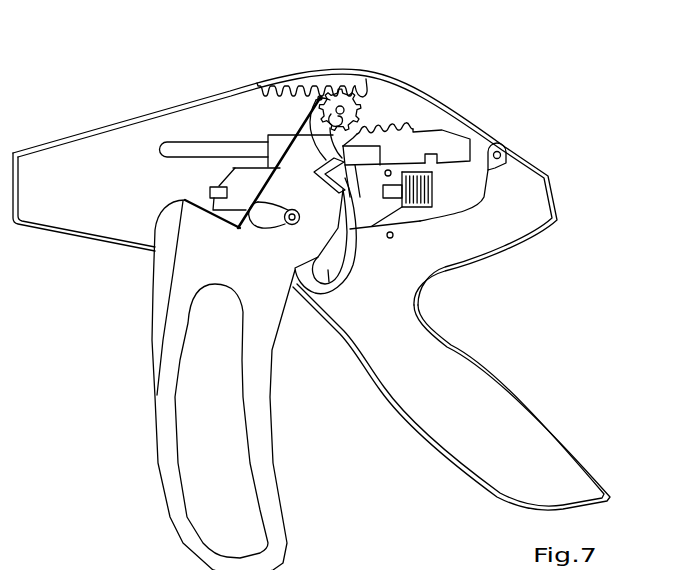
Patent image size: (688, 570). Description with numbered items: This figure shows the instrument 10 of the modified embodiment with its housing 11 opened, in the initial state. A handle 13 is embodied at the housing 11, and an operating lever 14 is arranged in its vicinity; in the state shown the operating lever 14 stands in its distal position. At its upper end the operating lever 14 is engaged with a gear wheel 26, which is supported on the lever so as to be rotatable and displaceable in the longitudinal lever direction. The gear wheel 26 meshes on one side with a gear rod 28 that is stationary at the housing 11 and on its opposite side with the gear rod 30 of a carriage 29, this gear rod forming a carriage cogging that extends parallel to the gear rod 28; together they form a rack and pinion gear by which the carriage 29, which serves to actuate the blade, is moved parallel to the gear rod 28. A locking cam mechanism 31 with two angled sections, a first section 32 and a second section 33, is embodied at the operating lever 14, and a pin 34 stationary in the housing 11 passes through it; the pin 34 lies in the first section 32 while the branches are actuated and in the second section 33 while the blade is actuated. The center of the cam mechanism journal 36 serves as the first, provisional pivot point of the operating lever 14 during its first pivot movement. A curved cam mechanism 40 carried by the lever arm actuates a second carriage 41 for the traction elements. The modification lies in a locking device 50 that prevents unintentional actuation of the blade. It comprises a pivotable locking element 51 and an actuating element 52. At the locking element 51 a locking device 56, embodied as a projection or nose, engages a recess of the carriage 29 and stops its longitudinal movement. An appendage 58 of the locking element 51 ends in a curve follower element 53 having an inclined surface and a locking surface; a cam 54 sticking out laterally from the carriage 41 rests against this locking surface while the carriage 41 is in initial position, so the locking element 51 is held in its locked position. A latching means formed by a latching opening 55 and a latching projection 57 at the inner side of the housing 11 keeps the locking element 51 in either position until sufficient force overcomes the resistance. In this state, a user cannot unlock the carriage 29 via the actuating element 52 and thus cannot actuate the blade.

The instrument 10 is at (553, 81).
The housing 11 is at (474, 152).
The handle 13 is at (498, 378).
The operating lever 14 is at (261, 447).
The gear wheel 26 is at (366, 99).
The gear rod 28 is at (301, 84).
The carriage 29 is at (441, 140).
The gear rod 30 is at (405, 122).
The locking cam mechanism 31 is at (307, 179).
The first section 32 is at (314, 142).
The second section 33 is at (318, 177).
The pin 34 is at (365, 152).
The cam mechanism journal 36 is at (283, 227).
The cam mechanism 40 is at (331, 283).
The carriage 41 is at (234, 169).
The locking device 50 is at (490, 187).
The locking element 51 is at (502, 143).
The actuating element 52 is at (374, 231).
The curve follower element 53 is at (384, 173).
The cam 54 is at (384, 196).
The latching opening 55 is at (423, 220).
The locking device 56 is at (433, 165).
The latching projection 57 is at (393, 238).
The appendage 58 is at (403, 166).